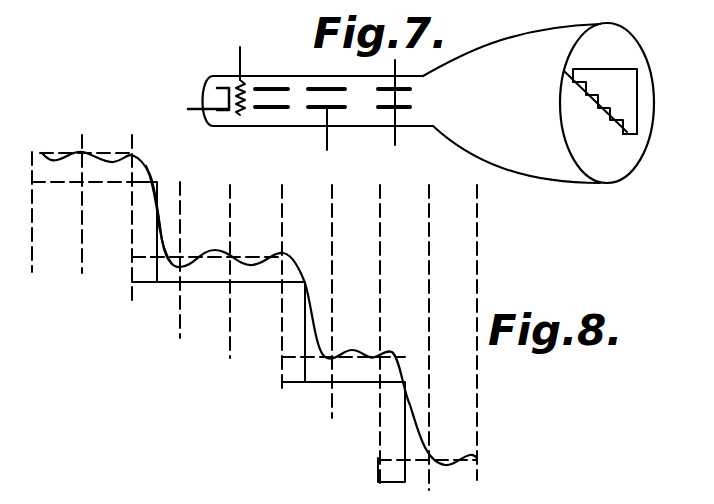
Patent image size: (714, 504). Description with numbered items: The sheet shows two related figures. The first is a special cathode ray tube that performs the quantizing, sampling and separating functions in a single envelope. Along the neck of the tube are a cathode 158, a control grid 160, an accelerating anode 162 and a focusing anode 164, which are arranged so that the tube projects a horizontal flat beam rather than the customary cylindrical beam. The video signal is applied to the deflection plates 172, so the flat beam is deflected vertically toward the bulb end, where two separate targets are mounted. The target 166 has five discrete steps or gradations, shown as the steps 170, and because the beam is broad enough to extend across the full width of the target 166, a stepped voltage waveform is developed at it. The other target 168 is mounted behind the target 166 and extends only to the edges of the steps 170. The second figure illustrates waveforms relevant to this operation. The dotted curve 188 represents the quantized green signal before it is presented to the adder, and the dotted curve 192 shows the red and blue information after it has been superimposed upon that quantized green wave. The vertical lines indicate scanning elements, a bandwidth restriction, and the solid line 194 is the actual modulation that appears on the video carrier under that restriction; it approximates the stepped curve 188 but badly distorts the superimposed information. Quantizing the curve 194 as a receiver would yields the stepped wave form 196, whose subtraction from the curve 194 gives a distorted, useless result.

In FIG. 7, the cathode 158 is at (217, 97).
In FIG. 7, the control grid 160 is at (238, 115).
In FIG. 7, the accelerating anode 162 is at (271, 87).
In FIG. 7, the focusing anode 164 is at (307, 108).
In FIG. 7, the deflection plates 172 is at (410, 107).
In FIG. 7, the target 166 is at (628, 83).
In FIG. 7, the target 168 is at (575, 90).
In FIG. 7, the steps 170 is at (630, 123).
In FIG. 8, the dotted curve 192 is at (113, 156).
In FIG. 8, the solid line curve 194 is at (153, 173).
In FIG. 8, the stepped wave form 196 is at (160, 237).
In FIG. 8, the dotted curve 188 is at (133, 245).